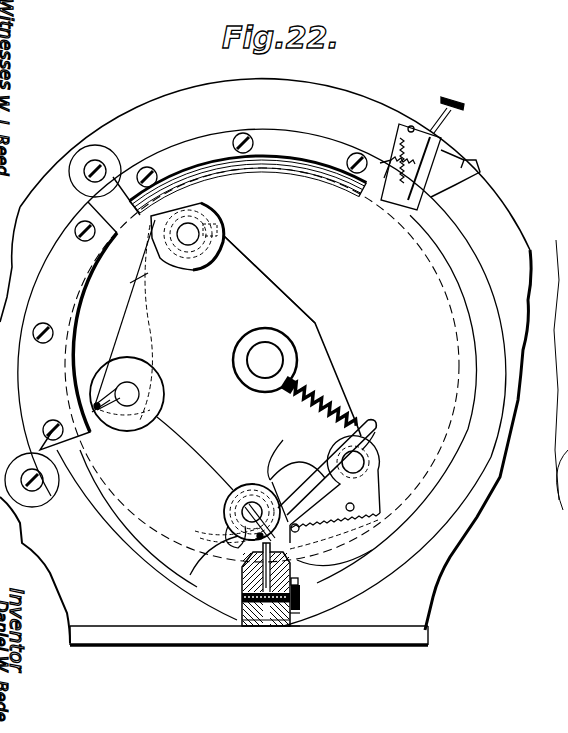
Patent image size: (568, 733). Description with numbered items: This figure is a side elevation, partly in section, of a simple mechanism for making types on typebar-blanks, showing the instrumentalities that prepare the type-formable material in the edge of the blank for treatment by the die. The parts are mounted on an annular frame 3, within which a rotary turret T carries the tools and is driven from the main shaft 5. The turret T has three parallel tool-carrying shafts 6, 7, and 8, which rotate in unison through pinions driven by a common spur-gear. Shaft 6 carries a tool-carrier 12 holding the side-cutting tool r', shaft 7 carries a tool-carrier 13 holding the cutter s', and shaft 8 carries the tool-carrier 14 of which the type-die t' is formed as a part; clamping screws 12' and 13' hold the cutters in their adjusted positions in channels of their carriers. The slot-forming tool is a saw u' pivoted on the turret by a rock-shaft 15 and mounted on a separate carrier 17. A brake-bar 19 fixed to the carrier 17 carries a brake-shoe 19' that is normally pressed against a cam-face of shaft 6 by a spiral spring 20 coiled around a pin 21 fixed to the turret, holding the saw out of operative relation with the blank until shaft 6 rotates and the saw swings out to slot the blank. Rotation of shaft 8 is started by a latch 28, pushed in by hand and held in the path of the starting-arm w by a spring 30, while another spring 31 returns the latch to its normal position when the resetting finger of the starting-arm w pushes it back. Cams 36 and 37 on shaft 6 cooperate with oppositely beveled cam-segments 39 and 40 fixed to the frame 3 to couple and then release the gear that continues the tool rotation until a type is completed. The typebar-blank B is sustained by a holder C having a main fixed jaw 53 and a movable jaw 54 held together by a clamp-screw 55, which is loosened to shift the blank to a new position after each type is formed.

The annular frame 3 is at (265, 362).
The cam-segment 39 is at (88, 313).
The cam-segment 40 is at (247, 178).
The spring 30 is at (384, 157).
The spring 31 is at (430, 167).
The latch 28 is at (448, 130).
The tool-carrier 14 is at (182, 268).
The tool-carrying shaft 8 is at (227, 240).
The type-die t' is at (125, 320).
The starting-arm w is at (152, 272).
The turret T is at (261, 279).
The main shaft 5 is at (264, 350).
The tool-carrier 13 is at (131, 383).
The tool-carrying shaft 7 is at (140, 393).
The clamping screw 13' is at (115, 386).
The cutter s' is at (111, 426).
The pin or stud 21 is at (324, 397).
The spiral spring 20 is at (358, 424).
The brake-bar 19 is at (385, 430).
The rock-shaft 15 is at (364, 463).
The saw u' is at (335, 492).
The tool-carrier 12 is at (252, 500).
The tool-carrying shaft 6 is at (229, 509).
The carrier 17 is at (303, 473).
The brake-shoe 19' is at (276, 453).
The clamping screw 12' is at (212, 553).
The side-cutting tool r' is at (334, 565).
The typebar-blank B is at (242, 580).
The holder C is at (252, 610).
The cam 37 is at (241, 597).
The main fixed jaw 53 is at (242, 620).
The cam 36 is at (321, 593).
The clamp-screw 55 is at (297, 613).
The movable jaw 54 is at (294, 613).